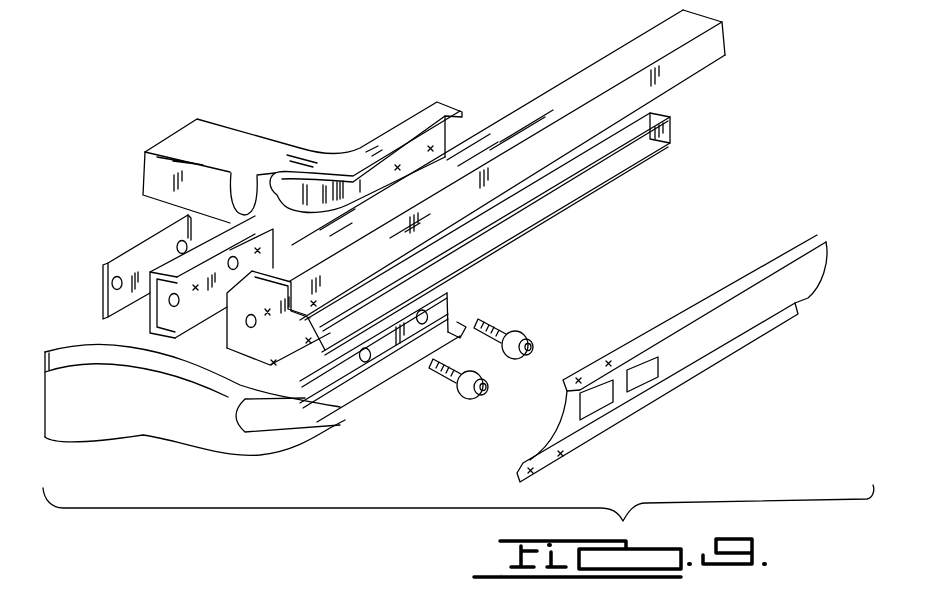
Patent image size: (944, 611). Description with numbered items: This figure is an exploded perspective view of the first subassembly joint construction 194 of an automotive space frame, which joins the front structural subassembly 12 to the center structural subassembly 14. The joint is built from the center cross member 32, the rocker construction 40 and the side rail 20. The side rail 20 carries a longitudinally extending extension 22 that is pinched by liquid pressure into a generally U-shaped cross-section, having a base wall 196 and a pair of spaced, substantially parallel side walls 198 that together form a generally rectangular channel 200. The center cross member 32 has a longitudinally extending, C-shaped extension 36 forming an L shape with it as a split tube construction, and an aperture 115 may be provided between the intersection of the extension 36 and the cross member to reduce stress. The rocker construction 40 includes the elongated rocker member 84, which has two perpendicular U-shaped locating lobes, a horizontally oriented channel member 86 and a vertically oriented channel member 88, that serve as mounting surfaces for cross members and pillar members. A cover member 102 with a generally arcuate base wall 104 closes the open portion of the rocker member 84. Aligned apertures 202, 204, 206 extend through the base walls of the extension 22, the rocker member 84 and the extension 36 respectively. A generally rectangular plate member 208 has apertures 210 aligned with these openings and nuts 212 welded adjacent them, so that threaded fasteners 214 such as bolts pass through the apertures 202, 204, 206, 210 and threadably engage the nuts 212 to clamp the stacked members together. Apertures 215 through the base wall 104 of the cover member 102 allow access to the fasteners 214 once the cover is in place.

The front structural subassembly 12 is at (153, 443).
The center structural subassembly 14 is at (302, 136).
The side rail 20 is at (58, 444).
The extension 22 is at (307, 430).
The center cross member 32 is at (198, 133).
The extension 36 is at (237, 190).
The rocker construction 40 is at (693, 140).
The rocker member 84 is at (617, 50).
The channel member 86 is at (175, 307).
The channel member 88 is at (692, 15).
The cover member 102 is at (691, 358).
The base wall 104 is at (693, 357).
The aperture 115 is at (292, 168).
The first subassembly joint construction 194 is at (508, 65).
The base wall 196 is at (440, 297).
The side wall 198 is at (453, 272).
The channel 200 is at (453, 330).
The aperture 202 is at (364, 362).
The aperture 204 is at (251, 328).
The aperture 206 is at (231, 270).
The plate member 208 is at (145, 252).
The aperture 210 is at (111, 286).
The nut 212 is at (102, 284).
The threaded fastener 214 is at (517, 361).
The aperture 215 is at (645, 378).